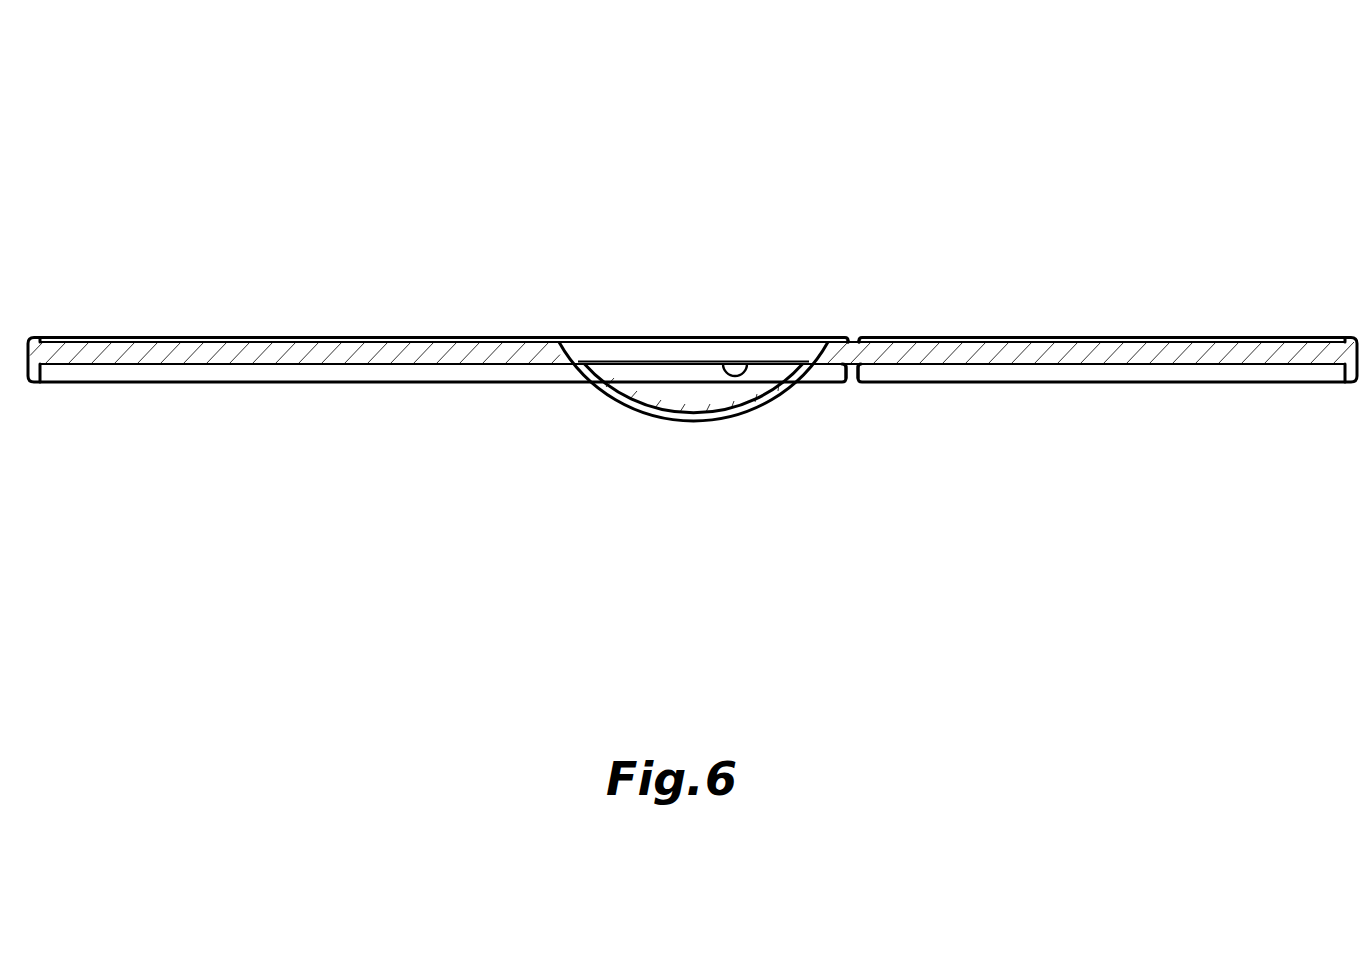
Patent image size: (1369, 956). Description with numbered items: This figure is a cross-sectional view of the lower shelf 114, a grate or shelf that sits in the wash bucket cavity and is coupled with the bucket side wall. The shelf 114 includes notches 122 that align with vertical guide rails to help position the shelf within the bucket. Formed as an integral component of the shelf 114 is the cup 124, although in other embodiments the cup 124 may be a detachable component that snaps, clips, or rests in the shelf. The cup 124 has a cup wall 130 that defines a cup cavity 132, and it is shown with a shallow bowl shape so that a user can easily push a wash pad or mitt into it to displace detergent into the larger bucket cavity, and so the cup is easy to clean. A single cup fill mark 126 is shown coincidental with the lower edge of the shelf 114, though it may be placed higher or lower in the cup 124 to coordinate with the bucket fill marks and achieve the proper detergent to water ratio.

The lower shelf 114 is at (692, 303).
The notches 122 is at (852, 377).
The cup 124 is at (658, 383).
The cup fill mark 126 is at (747, 363).
The cup wall 130 is at (612, 402).
The cup cavity 132 is at (662, 383).